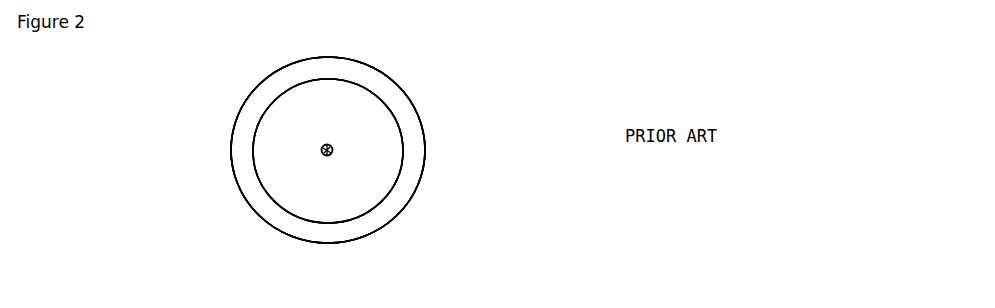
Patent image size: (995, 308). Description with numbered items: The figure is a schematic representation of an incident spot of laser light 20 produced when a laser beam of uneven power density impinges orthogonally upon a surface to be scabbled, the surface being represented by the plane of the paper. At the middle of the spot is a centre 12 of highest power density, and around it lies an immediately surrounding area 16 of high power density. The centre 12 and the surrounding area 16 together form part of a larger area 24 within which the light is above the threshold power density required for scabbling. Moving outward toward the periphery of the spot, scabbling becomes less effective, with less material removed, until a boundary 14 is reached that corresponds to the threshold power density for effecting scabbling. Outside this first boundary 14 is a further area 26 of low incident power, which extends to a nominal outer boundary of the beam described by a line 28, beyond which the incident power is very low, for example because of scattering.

The spot of laser light 20 is at (233, 58).
The centre 12 is at (333, 143).
The boundary 14 is at (403, 140).
The area 24 is at (378, 158).
The further area 26 is at (405, 184).
The line 28 is at (407, 207).
The immediately surrounding area 16 is at (345, 164).